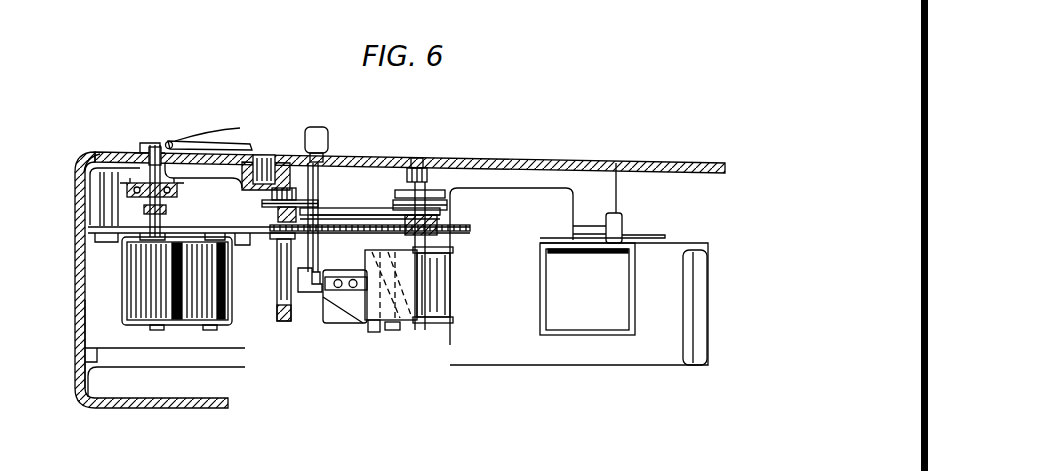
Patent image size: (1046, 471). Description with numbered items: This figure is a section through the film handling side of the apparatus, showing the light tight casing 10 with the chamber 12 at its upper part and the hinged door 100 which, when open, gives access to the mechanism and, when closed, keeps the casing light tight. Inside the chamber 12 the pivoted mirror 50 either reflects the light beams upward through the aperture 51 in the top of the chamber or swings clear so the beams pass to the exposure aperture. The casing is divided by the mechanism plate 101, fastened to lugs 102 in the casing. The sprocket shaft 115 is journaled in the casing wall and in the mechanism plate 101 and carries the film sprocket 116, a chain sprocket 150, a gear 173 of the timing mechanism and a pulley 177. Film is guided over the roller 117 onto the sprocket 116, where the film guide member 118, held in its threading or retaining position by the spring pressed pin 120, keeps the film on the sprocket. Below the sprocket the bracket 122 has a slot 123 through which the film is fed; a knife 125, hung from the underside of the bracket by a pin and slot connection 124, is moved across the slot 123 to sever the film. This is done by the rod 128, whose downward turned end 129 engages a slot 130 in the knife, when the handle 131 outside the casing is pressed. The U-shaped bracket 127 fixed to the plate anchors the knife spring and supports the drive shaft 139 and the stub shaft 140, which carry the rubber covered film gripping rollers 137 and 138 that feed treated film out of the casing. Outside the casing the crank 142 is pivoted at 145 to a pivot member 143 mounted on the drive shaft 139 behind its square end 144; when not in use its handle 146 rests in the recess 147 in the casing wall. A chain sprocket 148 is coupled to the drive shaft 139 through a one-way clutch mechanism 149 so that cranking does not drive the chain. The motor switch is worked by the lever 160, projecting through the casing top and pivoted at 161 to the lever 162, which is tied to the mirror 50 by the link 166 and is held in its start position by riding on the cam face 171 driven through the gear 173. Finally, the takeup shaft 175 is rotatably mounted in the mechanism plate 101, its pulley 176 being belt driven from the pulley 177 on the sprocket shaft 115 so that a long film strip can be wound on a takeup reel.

The casing 10 is at (607, 163).
The chamber 12 is at (540, 366).
The mirror 50 is at (640, 255).
The aperture 51 is at (633, 325).
The hinged door 100 is at (142, 408).
The mechanism plate 101 is at (80, 250).
The lugs 102 is at (98, 210).
The sprocket shaft 115 is at (435, 190).
The film sprocket 116 is at (440, 324).
The roller 117 is at (447, 282).
The film guide member 118 is at (416, 325).
The spring pressed pin 120 is at (387, 330).
The bracket 122 is at (357, 324).
The slot 123 is at (383, 330).
The pin and slot connection 124 is at (352, 277).
The knife 125 is at (340, 324).
The U-shaped bracket 127 is at (124, 322).
The rod 128 is at (320, 175).
The downward turned end 129 is at (302, 290).
The slot 130 is at (318, 293).
The handle 131 is at (318, 127).
The film gripping roller 137 is at (160, 330).
The film gripping roller 138 is at (215, 330).
The drive shaft 139 is at (146, 213).
The stub shaft 140 is at (232, 237).
The crank 142 is at (225, 146).
The pivot member 143 is at (174, 141).
The square end 144 is at (150, 143).
The pivot 145 is at (210, 133).
The handle 146 is at (264, 155).
The recess 147 is at (242, 178).
The chain sprocket 148 is at (125, 160).
The one-way clutch mechanism 149 is at (128, 190).
The chain sprocket 150 is at (412, 170).
The lever 160 is at (340, 210).
The pivot 161 is at (383, 213).
The lever 162 is at (627, 236).
The link 166 is at (624, 222).
The cam face 171 is at (272, 232).
The gear 173 is at (440, 230).
The takeup shaft 175 is at (280, 312).
The pulley 176 is at (275, 212).
The pulley 177 is at (448, 205).